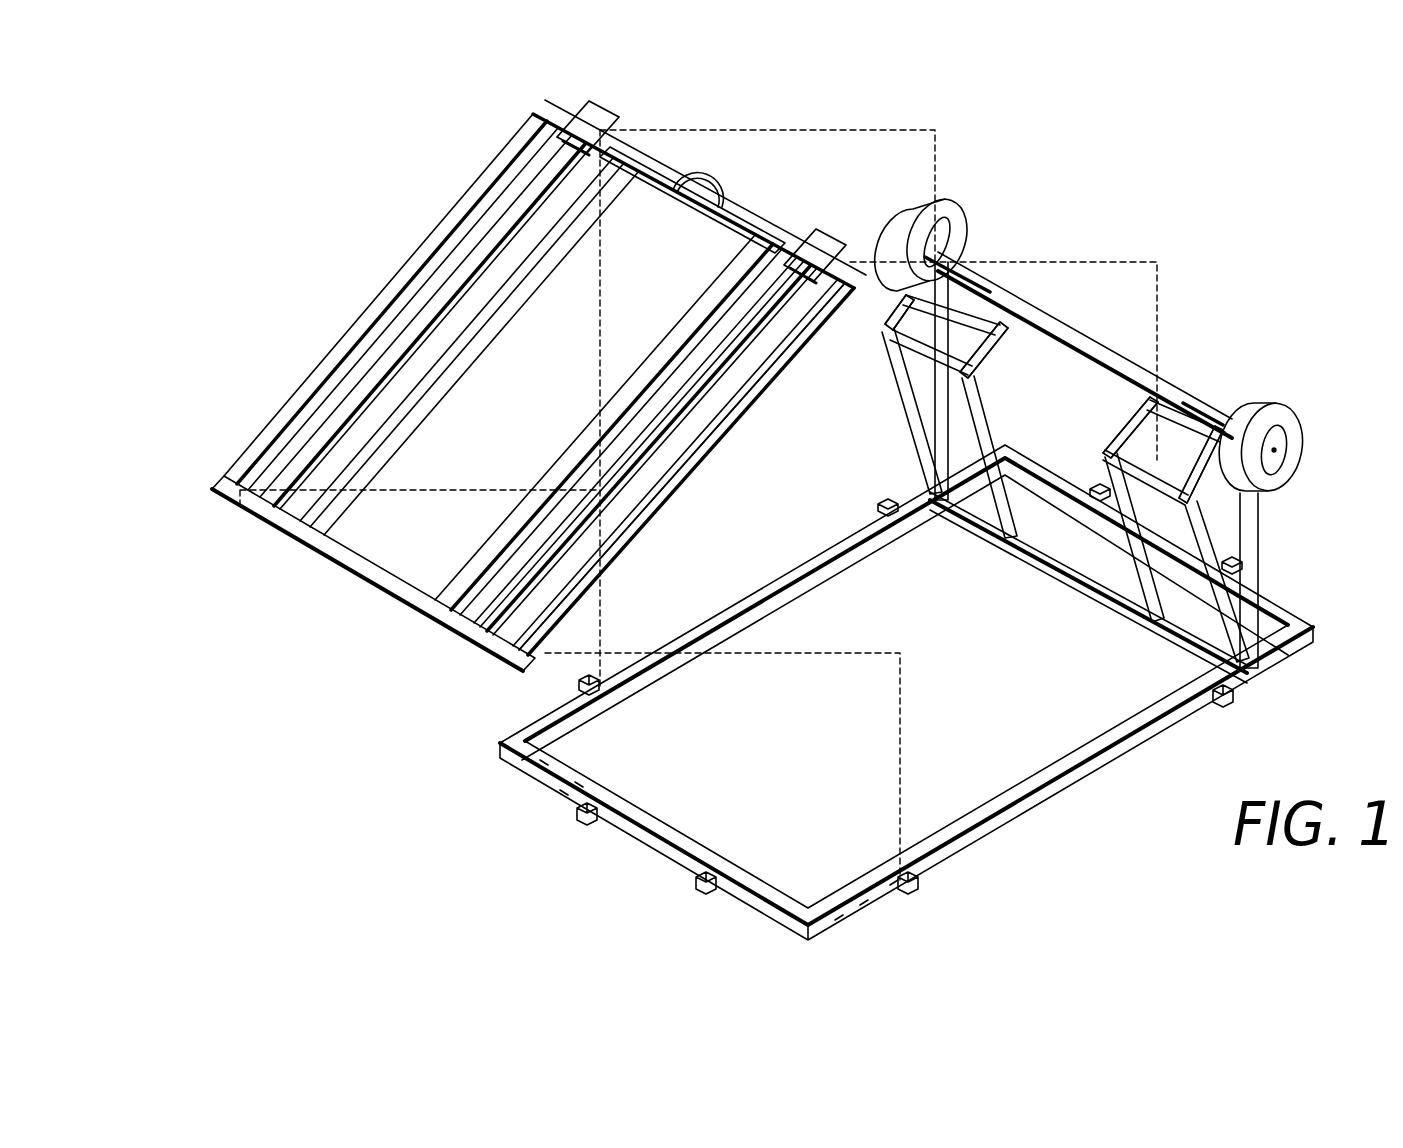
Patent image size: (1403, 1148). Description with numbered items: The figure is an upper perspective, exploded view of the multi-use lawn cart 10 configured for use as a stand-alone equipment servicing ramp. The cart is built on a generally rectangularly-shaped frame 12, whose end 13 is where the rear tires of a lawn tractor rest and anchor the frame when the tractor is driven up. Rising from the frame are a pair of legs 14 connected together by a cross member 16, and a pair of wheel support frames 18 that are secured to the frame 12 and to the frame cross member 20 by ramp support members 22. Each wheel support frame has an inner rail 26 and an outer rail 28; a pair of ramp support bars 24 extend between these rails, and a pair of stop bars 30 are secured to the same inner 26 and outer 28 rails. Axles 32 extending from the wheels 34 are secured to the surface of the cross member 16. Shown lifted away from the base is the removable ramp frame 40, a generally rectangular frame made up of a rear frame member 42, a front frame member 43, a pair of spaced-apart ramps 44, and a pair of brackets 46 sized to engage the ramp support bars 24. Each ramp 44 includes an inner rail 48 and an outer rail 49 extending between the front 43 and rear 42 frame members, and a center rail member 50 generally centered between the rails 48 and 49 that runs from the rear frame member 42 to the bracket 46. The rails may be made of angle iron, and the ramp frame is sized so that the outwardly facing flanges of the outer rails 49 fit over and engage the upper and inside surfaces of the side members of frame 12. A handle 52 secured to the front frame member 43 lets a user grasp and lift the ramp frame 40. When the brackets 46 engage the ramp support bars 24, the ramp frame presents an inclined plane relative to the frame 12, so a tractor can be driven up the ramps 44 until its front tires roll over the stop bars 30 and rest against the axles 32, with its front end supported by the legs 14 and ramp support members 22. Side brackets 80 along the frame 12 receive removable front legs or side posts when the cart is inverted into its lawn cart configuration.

The multi-use lawn cart 10 is at (1175, 173).
The frame 12 is at (1300, 620).
The end of frame 13 is at (650, 848).
The legs 14 is at (935, 412).
The cross member 16 is at (1165, 380).
The wheel support frames 18 is at (985, 358).
The frame cross member 20 is at (1065, 590).
The ramp support members 22 is at (920, 462).
The ramp support bars 24 is at (930, 352).
The inner rails 26 is at (1005, 335).
The outer rails 28 is at (885, 310).
The stop bars 30 is at (965, 330).
The axles 32 is at (975, 262).
The wheels 34 is at (948, 210).
The ramp frame 40 is at (392, 240).
The rear frame member 42 is at (372, 590).
The front frame member 43 is at (690, 218).
The ramps 44 is at (447, 390).
The brackets 46 is at (595, 99).
The inner rails 48 is at (527, 280).
The outer rails 49 is at (365, 307).
The center rail member 50 is at (732, 372).
The handle 52 is at (705, 178).
The side brackets 80 is at (579, 681).